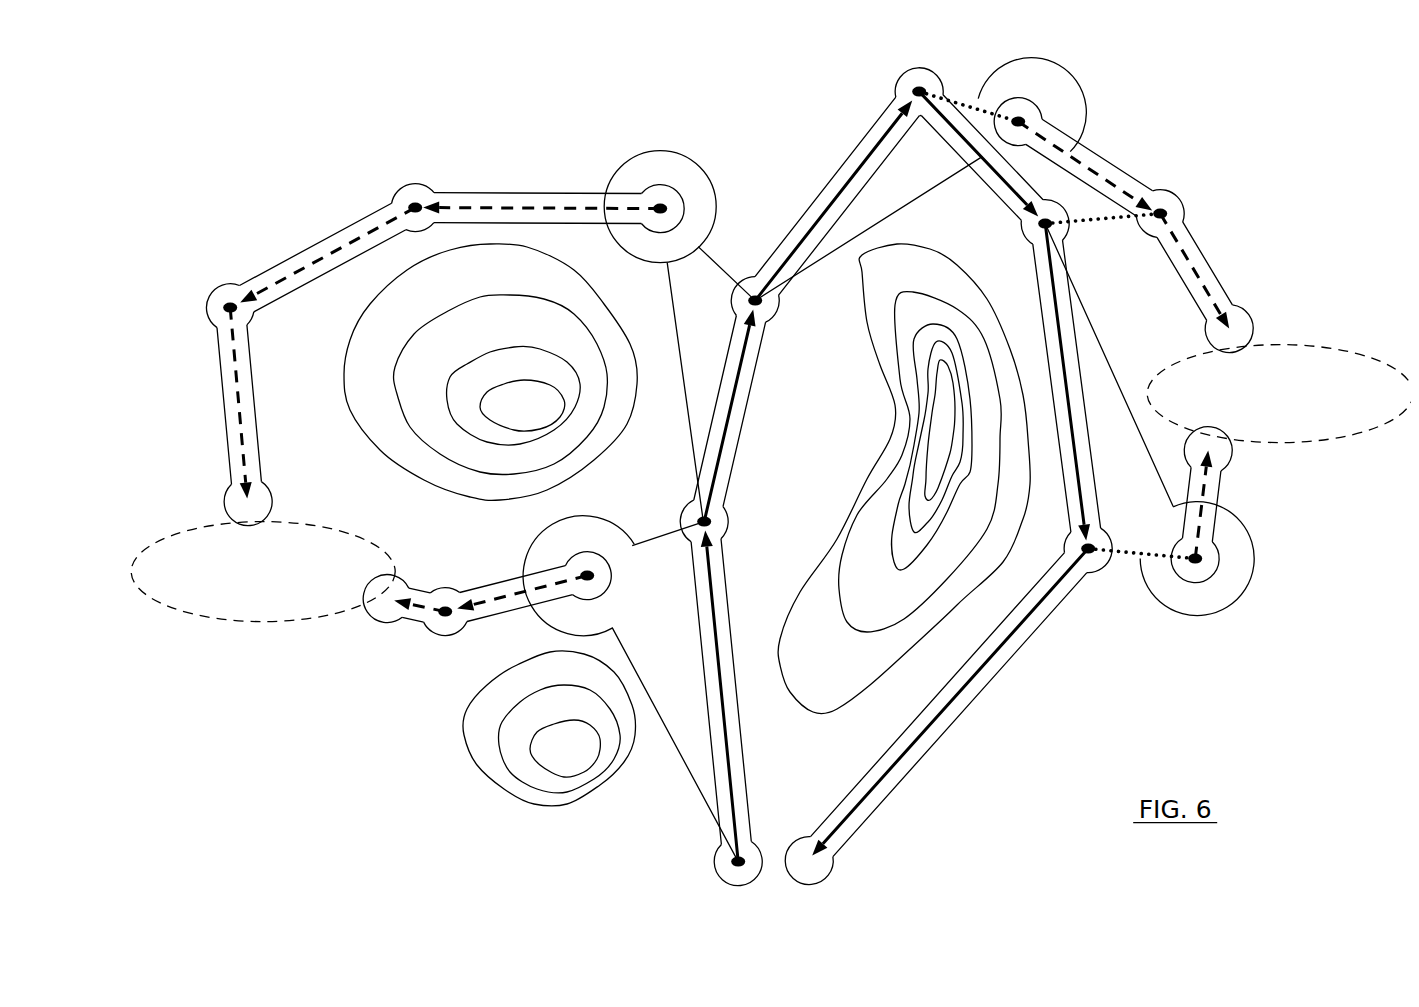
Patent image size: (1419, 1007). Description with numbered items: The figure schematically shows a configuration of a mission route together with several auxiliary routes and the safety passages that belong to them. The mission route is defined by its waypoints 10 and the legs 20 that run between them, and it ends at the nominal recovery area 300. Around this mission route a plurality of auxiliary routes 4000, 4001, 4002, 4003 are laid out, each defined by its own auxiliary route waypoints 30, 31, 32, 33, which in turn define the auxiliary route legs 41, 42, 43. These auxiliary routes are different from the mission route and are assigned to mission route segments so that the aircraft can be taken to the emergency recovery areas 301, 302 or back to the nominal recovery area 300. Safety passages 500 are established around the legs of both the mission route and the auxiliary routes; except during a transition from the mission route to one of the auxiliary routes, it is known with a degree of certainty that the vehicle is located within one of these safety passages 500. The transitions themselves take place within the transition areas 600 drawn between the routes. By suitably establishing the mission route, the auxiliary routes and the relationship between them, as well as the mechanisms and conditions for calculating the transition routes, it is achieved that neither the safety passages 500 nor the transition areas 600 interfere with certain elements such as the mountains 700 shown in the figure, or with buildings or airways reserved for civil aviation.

The waypoints 10 is at (917, 92).
The legs 20 is at (822, 215).
The auxiliary route waypoint 30 is at (583, 575).
The auxiliary route waypoint 31 is at (230, 307).
The auxiliary route waypoint 32 is at (1017, 121).
The auxiliary route waypoint 33 is at (1198, 563).
The auxiliary route leg 41 is at (476, 206).
The auxiliary route leg 42 is at (1075, 158).
The auxiliary route leg 43 is at (1210, 496).
The nominal recovery area 300 is at (812, 876).
The emergency recovery area 301 is at (263, 572).
The emergency recovery area 302 is at (1279, 394).
The safety passages 500 is at (536, 200).
The transition areas 600 is at (700, 377).
The mountains 700 is at (472, 390).
The auxiliary route 4000 is at (438, 650).
The auxiliary route 4001 is at (310, 222).
The auxiliary route 4002 is at (1147, 136).
The auxiliary route 4003 is at (1252, 484).